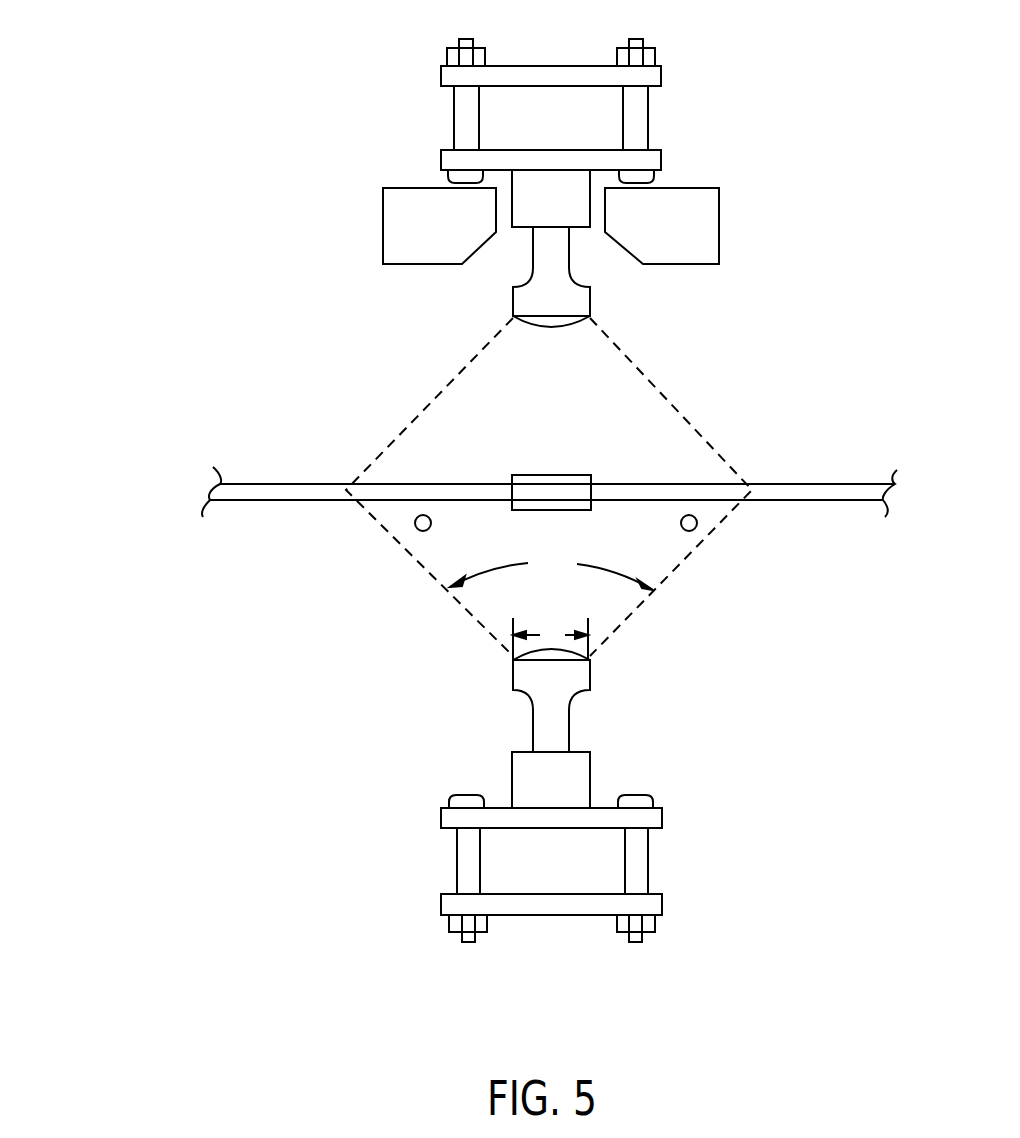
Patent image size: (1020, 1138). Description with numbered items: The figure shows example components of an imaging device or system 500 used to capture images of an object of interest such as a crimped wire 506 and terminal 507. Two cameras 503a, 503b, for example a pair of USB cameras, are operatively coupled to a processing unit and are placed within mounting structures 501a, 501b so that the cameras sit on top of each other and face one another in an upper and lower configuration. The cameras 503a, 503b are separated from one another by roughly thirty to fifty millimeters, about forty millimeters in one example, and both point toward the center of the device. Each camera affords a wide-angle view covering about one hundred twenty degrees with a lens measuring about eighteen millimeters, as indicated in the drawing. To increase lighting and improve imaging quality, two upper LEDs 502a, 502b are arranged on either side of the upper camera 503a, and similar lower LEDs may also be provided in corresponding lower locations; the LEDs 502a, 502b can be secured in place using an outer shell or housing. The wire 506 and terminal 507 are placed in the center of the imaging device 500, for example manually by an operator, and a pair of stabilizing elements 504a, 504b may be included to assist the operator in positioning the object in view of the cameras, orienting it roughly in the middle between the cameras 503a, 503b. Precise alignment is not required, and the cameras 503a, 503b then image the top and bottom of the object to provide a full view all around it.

The imaging device 500 is at (118, 88).
The mounting structure 501a is at (455, 128).
The mounting structure 501b is at (457, 860).
The upper LED 502a is at (383, 222).
The upper LED 502b is at (719, 225).
The camera 503a is at (553, 327).
The camera 503b is at (513, 673).
The stabilizing element 504a is at (416, 529).
The stabilizing element 504b is at (695, 530).
The wire 506 is at (333, 483).
The terminal 507 is at (557, 475).